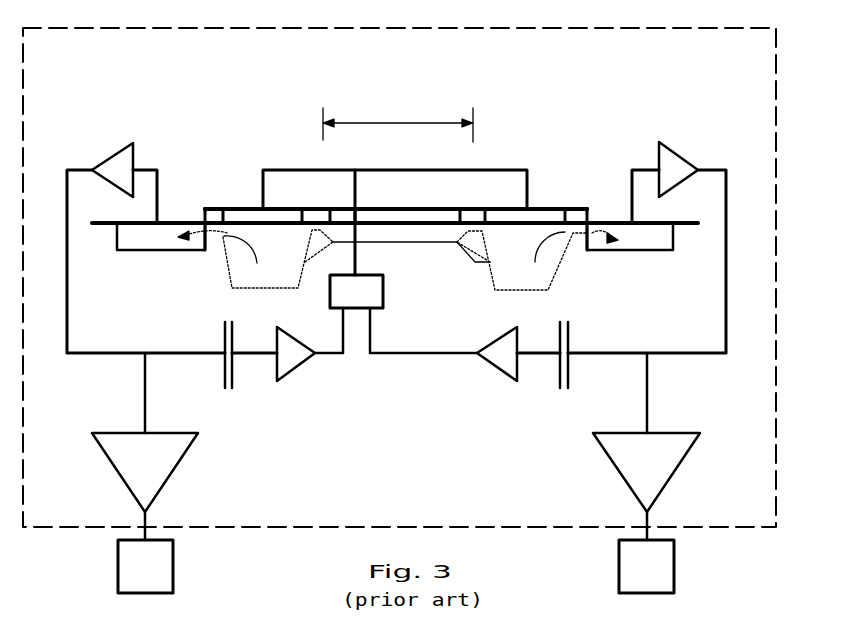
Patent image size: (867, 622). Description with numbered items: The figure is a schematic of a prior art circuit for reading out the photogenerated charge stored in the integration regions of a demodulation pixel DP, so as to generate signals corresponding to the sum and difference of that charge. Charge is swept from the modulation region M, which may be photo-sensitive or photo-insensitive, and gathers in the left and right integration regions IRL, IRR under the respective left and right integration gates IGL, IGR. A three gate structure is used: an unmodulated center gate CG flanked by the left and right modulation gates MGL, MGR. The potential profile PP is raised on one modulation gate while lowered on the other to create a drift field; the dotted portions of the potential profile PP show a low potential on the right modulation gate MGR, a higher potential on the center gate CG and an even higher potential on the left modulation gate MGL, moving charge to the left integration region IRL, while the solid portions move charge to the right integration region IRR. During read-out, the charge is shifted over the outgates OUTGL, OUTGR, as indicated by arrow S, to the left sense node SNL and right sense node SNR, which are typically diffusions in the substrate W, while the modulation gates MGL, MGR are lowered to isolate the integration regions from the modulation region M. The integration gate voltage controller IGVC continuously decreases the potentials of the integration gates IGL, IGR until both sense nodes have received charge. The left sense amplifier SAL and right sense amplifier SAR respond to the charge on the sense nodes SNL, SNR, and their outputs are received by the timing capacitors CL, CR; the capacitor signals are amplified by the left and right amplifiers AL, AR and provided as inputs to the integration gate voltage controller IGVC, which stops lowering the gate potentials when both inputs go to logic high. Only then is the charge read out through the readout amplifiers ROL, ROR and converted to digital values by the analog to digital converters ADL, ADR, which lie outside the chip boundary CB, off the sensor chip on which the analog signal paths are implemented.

The chip boundary CB is at (776, 338).
The center gate CG is at (408, 216).
The left sense amplifier SAL is at (124, 154).
The right sense amplifier SAR is at (683, 155).
The left outgate OUTGL is at (203, 208).
The left integration gate IGL is at (250, 208).
The left modulation gate MGL is at (310, 215).
The right modulation gate MGR is at (482, 215).
The right integration gate IGR is at (538, 215).
The right outgate OUTGR is at (584, 209).
The modulation region M is at (398, 123).
The demodulation pixel DP is at (510, 92).
The left sense node SNL is at (162, 244).
The right sense node SNR is at (655, 252).
The left integration region IRL is at (260, 269).
The right integration region IRR is at (520, 276).
The arrow S is at (222, 238).
The substrate W is at (395, 232).
The potential profile PP is at (457, 243).
The integration gate voltage controller IGVC is at (384, 305).
The left amplifier AL is at (298, 366).
The right amplifier AR is at (492, 366).
The left timing capacitor CL is at (226, 389).
The right timing capacitor CR is at (564, 389).
The left readout amplifier ROL is at (172, 478).
The right readout amplifier ROR is at (670, 478).
The left analog to digital converter ADL is at (173, 573).
The right analog to digital converter ADR is at (674, 573).